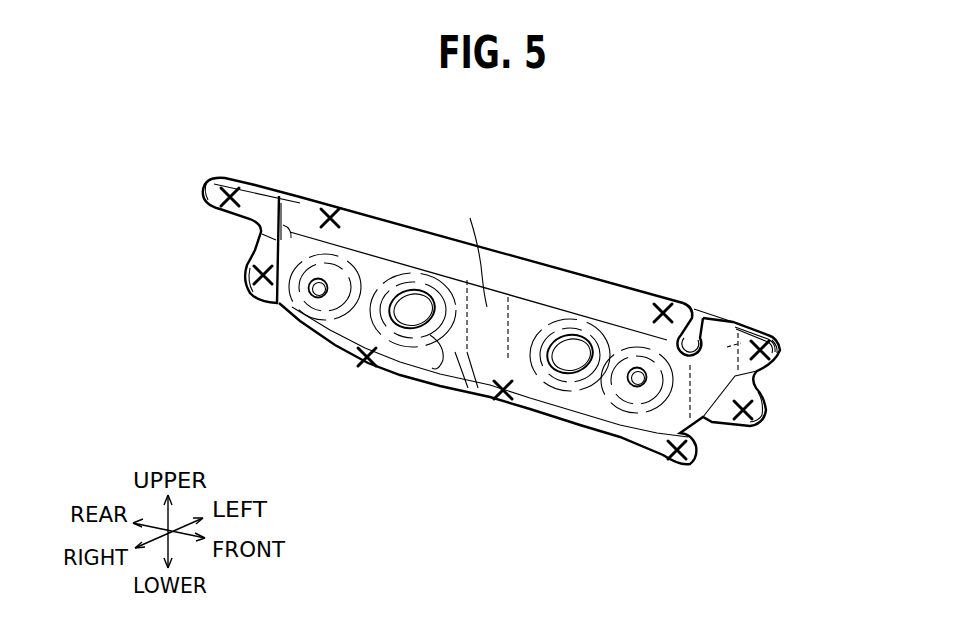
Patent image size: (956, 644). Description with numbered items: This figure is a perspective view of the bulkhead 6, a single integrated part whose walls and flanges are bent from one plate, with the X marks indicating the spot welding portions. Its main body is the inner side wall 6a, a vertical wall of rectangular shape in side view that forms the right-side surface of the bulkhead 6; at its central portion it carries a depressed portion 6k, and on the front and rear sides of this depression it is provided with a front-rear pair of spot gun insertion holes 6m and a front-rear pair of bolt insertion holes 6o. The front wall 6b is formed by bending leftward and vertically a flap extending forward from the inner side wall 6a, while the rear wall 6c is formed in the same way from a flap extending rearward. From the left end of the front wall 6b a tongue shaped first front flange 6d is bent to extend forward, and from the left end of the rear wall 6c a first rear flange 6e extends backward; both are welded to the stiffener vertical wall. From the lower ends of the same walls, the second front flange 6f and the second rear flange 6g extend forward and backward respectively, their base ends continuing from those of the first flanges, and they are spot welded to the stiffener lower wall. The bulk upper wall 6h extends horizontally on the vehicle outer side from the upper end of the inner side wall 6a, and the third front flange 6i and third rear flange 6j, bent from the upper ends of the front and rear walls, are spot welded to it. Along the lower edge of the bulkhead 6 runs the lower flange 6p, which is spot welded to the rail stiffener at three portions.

The bulkhead 6 is at (583, 158).
The inner side wall 6a is at (520, 327).
The front wall 6b is at (747, 328).
The rear wall 6c is at (266, 243).
The first front flange 6d is at (783, 352).
The first rear flange 6e is at (211, 190).
The second front flange 6f is at (751, 428).
The second rear flange 6g is at (250, 262).
The bulk upper wall 6h is at (547, 278).
The third front flange 6i is at (705, 310).
The third rear flange 6j is at (306, 199).
The depressed portion 6k is at (452, 330).
The spot gun insertion hole 6m is at (414, 345).
The bolt insertion hole 6o is at (318, 298).
The lower flange 6p is at (393, 370).